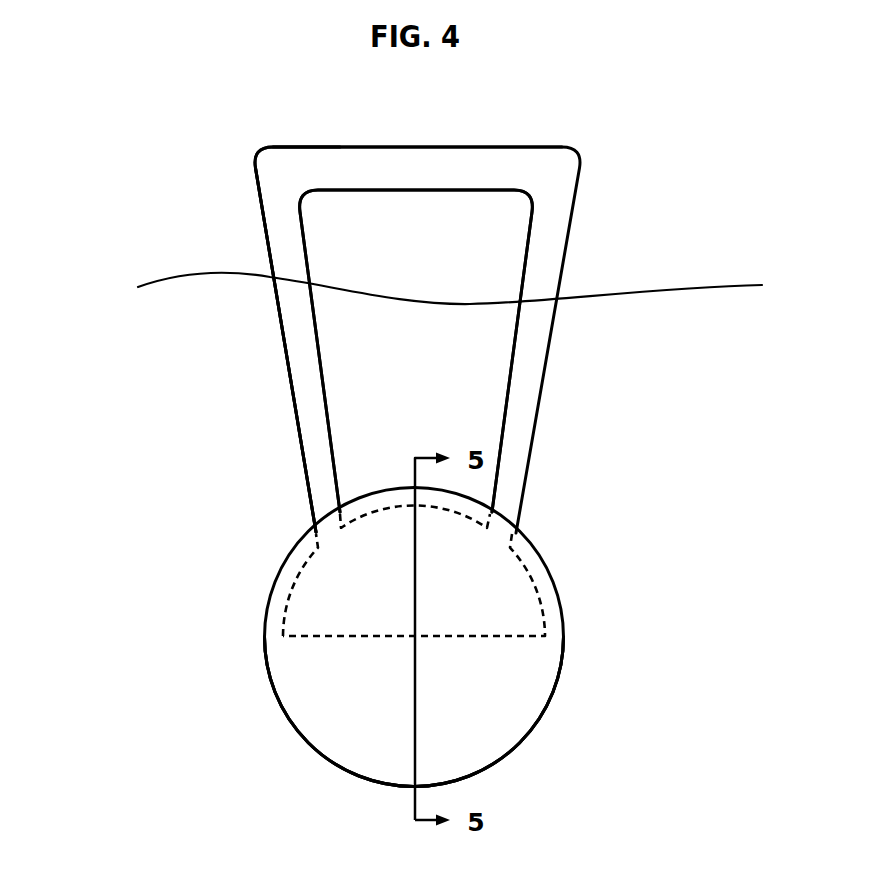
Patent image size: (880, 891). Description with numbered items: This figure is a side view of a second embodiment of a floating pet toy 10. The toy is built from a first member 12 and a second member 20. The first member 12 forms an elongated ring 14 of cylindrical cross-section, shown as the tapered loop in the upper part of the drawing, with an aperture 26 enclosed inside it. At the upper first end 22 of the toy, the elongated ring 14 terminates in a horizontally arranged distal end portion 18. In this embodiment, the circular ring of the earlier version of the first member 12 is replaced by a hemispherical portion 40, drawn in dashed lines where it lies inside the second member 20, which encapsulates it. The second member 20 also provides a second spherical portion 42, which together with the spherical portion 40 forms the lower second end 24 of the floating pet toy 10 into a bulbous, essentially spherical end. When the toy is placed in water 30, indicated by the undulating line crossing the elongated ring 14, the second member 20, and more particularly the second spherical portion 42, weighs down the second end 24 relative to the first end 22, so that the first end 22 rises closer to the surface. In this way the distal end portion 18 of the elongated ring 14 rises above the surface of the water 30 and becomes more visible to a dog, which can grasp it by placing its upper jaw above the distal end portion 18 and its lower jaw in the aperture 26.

The floating pet toy 10 is at (148, 257).
The first member 12 is at (538, 142).
The elongated ring 14 is at (287, 353).
The distal end portion 18 is at (362, 167).
The second member 20 is at (547, 542).
The first end 22 is at (305, 125).
The second end 24 is at (387, 800).
The aperture 26 is at (416, 351).
The water 30 is at (450, 309).
The spherical portion 40 is at (295, 578).
The second spherical portion 42 is at (337, 702).